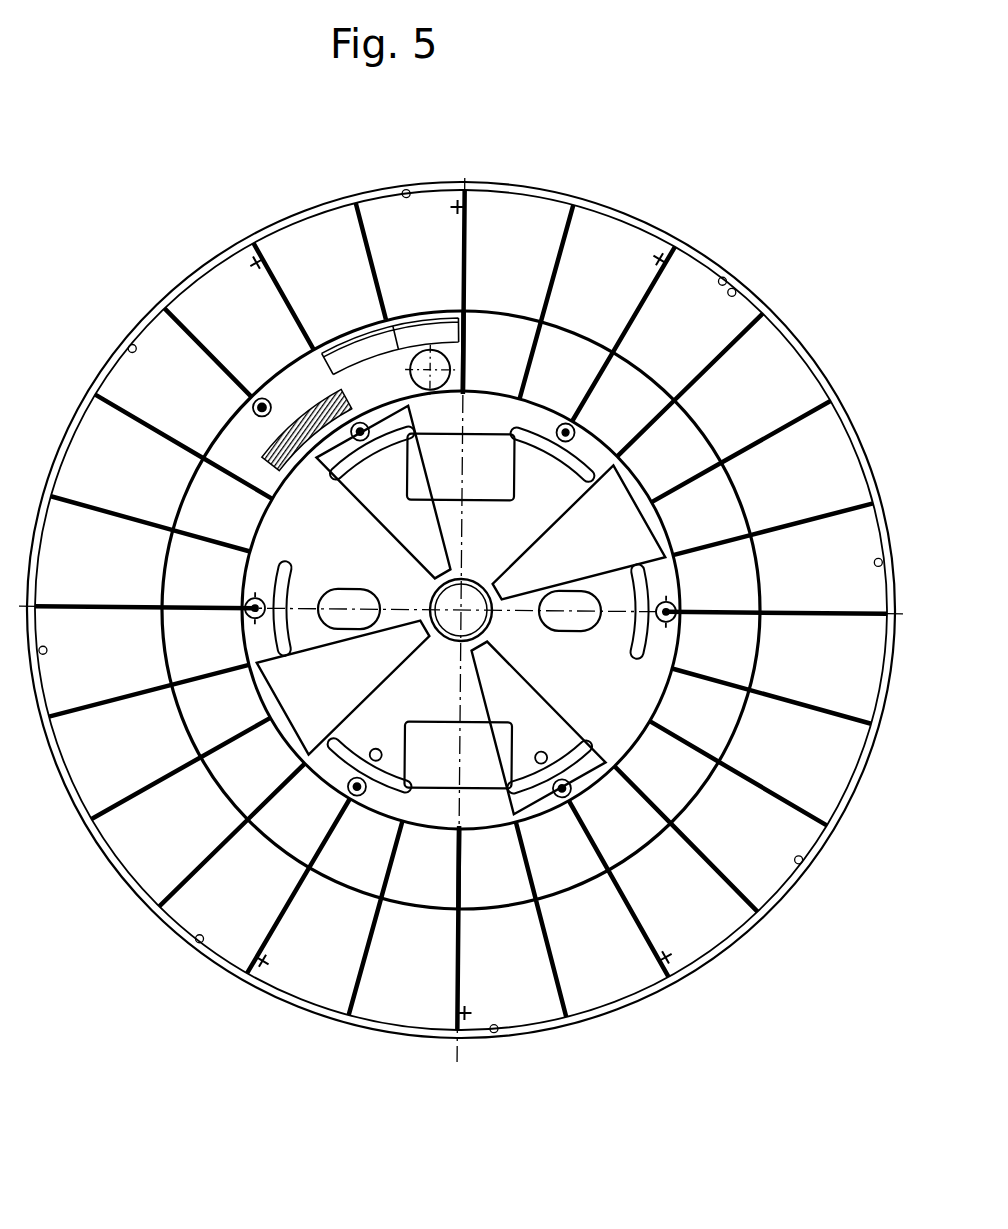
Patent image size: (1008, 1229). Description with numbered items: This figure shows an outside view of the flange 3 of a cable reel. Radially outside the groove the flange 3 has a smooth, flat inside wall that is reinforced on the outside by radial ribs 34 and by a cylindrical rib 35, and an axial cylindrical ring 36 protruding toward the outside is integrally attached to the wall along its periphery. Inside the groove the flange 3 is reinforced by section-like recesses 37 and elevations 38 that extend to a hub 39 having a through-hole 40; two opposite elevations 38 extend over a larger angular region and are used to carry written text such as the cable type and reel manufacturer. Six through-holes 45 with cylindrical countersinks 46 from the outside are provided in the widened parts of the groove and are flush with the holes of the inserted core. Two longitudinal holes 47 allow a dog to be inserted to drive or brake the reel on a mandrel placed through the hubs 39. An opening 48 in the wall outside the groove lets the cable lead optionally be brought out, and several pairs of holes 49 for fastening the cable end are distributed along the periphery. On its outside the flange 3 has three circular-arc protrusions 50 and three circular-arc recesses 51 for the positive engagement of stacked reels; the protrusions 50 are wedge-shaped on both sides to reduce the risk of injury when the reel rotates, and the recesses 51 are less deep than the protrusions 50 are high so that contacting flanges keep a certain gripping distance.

The flange 3 is at (461, 557).
The radial ribs 34 is at (460, 609).
The cylindrical rib 35 is at (460, 609).
The cylindrical ring 36 is at (460, 608).
The section-like recesses 37 is at (460, 609).
The elevations 38 is at (459, 611).
The hub 39 is at (459, 578).
The through-hole 40 is at (461, 610).
The through-holes 45 is at (555, 396).
The cylindrical countersinks 46 is at (602, 411).
The longitudinal holes 47 is at (459, 610).
The opening 48 is at (467, 309).
The pairs of holes 49 is at (461, 611).
The protrusions 50 is at (201, 553).
The recesses 51 is at (386, 353).